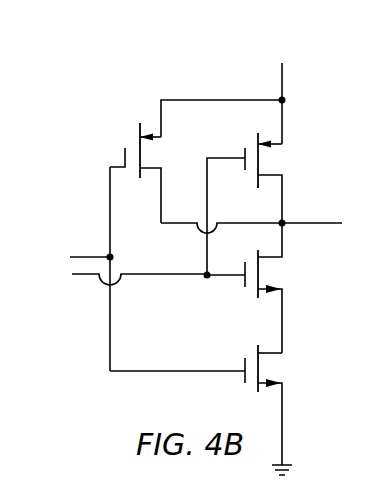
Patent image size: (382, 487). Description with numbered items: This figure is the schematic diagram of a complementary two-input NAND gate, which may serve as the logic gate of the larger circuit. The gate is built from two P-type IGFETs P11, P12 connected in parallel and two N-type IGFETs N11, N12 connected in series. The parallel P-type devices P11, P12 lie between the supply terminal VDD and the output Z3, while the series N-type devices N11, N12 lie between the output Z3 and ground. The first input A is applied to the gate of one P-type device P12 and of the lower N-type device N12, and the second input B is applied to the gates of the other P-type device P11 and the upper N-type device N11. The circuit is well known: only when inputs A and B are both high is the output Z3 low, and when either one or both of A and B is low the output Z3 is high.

The positive supply voltage VDD is at (232, 95).
The P-channel transistor P12 is at (147, 173).
The P-channel transistor P11 is at (256, 204).
The N-channel transistor N11 is at (256, 288).
The N-channel transistor N12 is at (208, 410).
The output Z3 is at (263, 226).
The input A is at (84, 269).
The input B is at (130, 280).